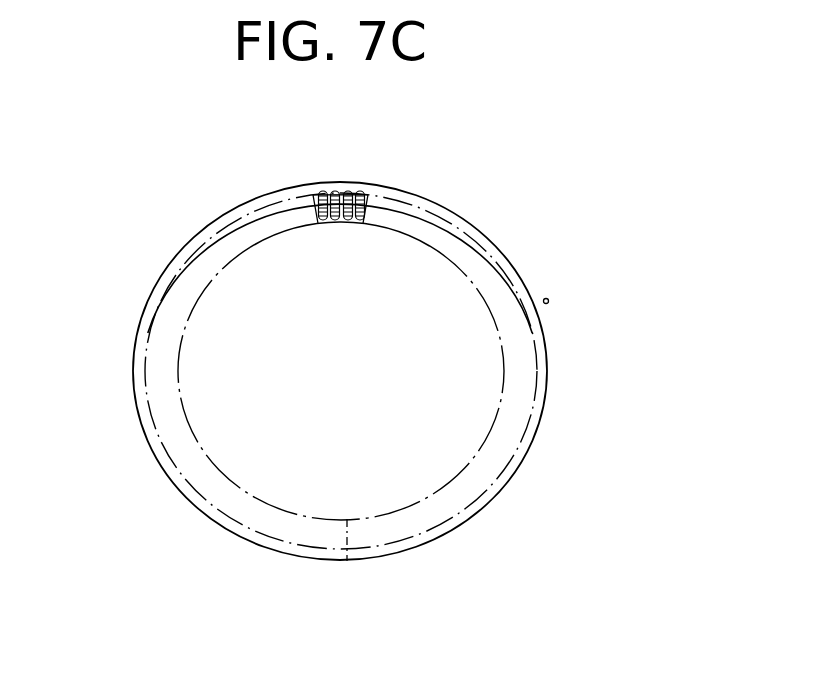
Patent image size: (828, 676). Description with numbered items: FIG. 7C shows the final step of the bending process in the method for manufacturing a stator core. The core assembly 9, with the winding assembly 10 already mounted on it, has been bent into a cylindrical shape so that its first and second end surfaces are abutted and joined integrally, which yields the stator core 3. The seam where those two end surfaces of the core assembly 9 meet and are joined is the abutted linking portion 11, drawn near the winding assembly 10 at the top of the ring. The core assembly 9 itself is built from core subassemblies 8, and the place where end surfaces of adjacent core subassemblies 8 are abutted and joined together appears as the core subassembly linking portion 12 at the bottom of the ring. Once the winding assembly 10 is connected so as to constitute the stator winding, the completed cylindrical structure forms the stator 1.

The stator 1 is at (113, 202).
The stator core 3 is at (513, 263).
The core subassemblies 8 is at (153, 302).
The core assembly 9 is at (549, 299).
The winding assembly 10 is at (333, 222).
The abutted linking portion 11 is at (343, 193).
The core subassembly linking portion 12 is at (347, 562).